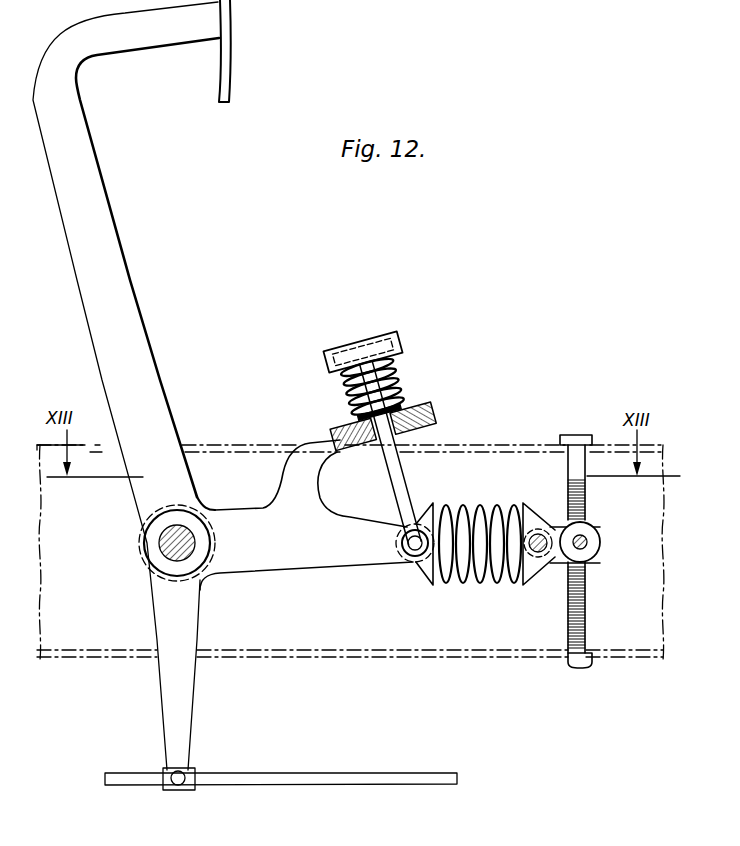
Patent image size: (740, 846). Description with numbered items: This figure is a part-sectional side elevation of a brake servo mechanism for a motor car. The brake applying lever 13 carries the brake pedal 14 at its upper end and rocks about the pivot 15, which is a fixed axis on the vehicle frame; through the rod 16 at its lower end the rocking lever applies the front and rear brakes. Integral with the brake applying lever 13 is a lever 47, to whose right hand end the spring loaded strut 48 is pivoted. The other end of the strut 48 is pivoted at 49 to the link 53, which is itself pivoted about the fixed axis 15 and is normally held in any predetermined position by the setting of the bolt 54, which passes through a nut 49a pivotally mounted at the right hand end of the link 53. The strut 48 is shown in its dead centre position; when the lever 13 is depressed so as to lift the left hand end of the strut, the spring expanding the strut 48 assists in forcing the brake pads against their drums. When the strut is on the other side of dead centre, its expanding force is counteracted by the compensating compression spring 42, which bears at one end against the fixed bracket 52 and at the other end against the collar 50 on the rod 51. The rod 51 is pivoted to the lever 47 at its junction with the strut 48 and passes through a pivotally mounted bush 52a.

The brake applying lever 13 is at (97, 240).
The brake pedal 14 is at (232, 60).
The pivot 15 is at (167, 547).
The rod 16 is at (357, 778).
The compensating compression spring 42 is at (400, 390).
The lever 47 is at (335, 553).
The spring loaded strut 48 is at (465, 508).
The pivot 49 is at (543, 525).
The nut 49a is at (590, 533).
The collar 50 is at (403, 342).
The rod 51 is at (415, 478).
The fixed bracket 52 is at (345, 450).
The pivotally mounted bush 52a is at (400, 415).
The link 53 is at (403, 570).
The bolt 54 is at (587, 622).